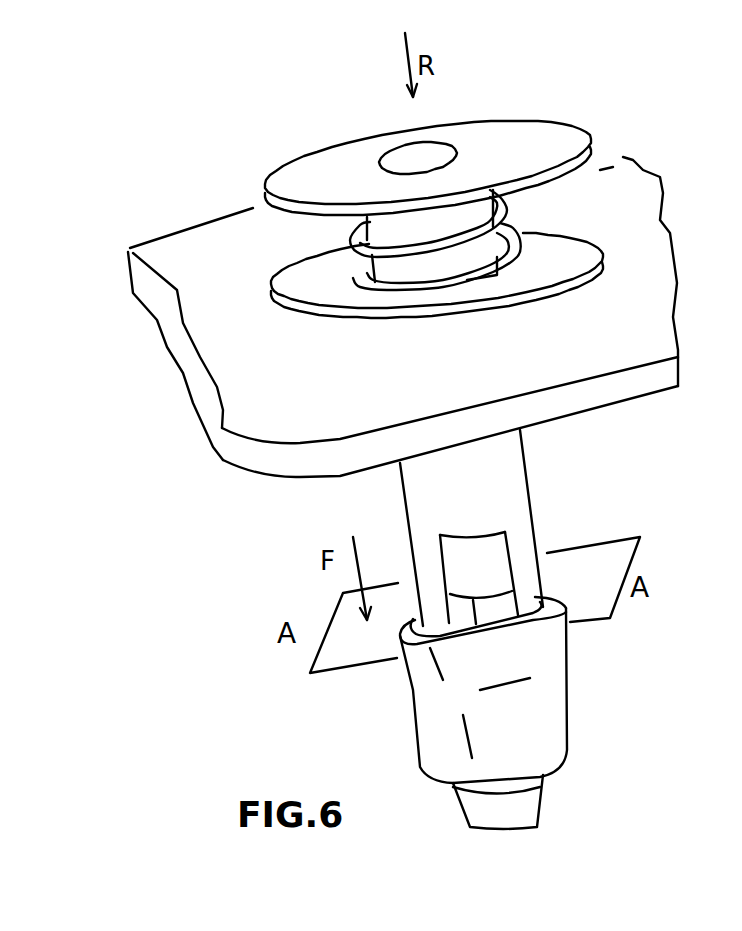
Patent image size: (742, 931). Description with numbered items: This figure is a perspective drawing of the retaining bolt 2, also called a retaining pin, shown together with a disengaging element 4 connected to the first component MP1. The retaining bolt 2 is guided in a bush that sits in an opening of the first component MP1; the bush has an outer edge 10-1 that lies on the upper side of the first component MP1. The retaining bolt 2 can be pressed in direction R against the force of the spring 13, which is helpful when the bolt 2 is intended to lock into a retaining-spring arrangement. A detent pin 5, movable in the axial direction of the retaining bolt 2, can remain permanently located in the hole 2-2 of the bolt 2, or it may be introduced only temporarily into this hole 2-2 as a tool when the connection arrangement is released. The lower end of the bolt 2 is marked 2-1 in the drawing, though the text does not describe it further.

The first component MP1 is at (243, 450).
The hole of the bolt 2-2 is at (403, 163).
The spring 13 is at (350, 240).
The outer edge of the bush 10-1 is at (520, 267).
The retaining bolt 2 is at (513, 485).
The detent pin 5 is at (490, 567).
The disengaging element 4 is at (437, 718).
The lower end pin of bolt 2-1 is at (467, 787).